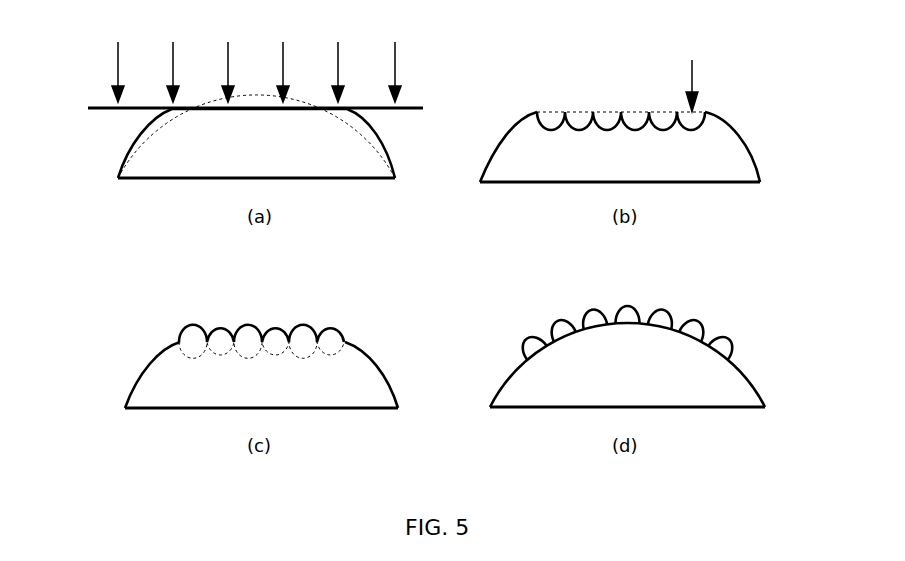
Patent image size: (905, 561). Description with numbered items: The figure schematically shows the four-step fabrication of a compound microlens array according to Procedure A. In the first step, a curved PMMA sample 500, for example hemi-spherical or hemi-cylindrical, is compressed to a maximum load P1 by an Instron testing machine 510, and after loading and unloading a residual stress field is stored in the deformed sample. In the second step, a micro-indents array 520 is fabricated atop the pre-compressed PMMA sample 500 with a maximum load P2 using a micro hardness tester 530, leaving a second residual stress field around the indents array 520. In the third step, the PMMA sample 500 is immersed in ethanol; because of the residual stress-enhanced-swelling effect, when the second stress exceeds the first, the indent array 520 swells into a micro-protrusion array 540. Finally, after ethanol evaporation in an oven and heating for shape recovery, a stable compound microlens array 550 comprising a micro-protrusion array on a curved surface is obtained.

The PMMA sample 500 is at (118, 179).
The Instron testing machine 510 is at (88, 108).
The micro-indents array 520 is at (789, 93).
The micro hardness tester 530 is at (700, 97).
The micro-protrusion array 540 is at (117, 315).
The compound microlens array 550 is at (768, 378).